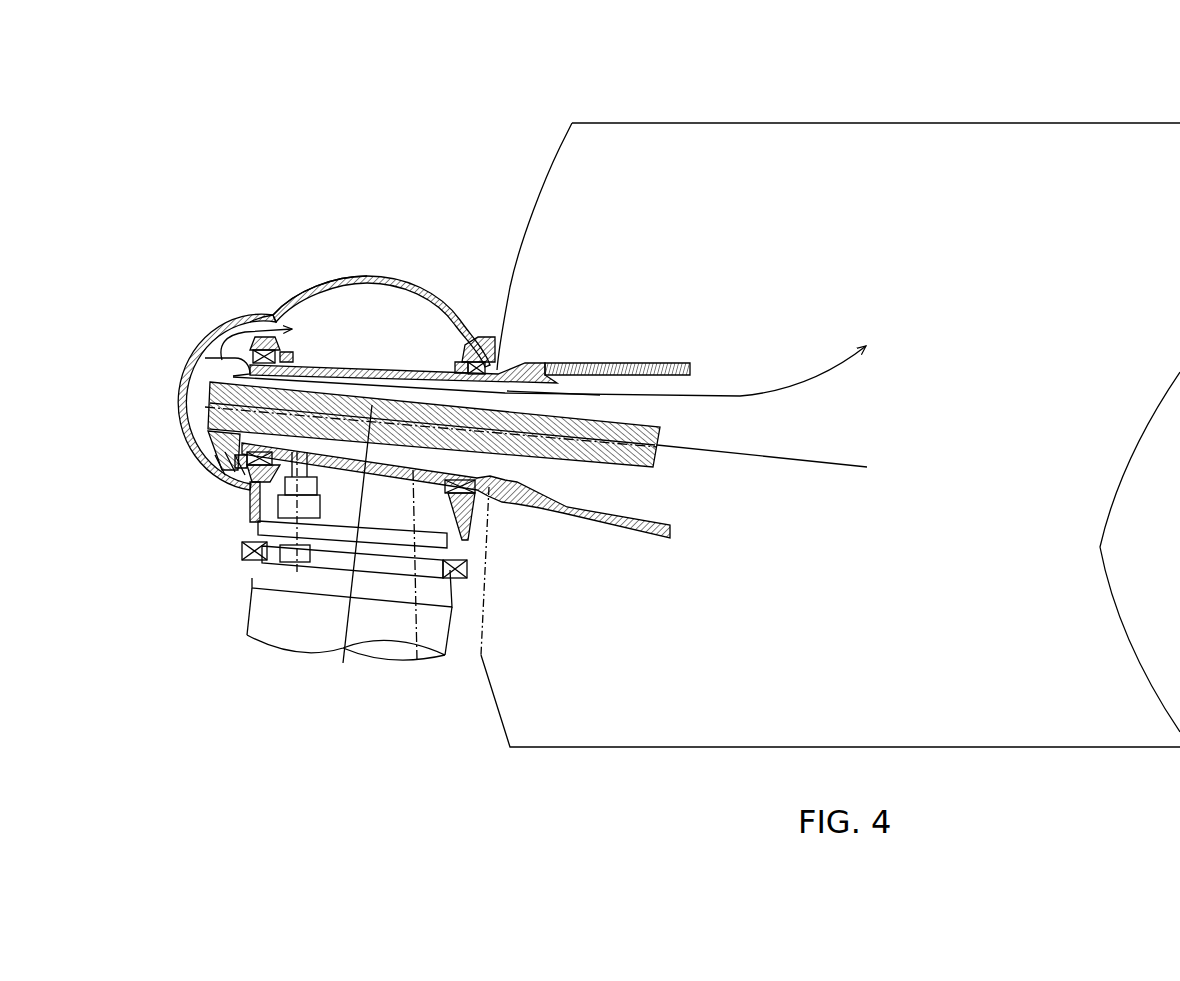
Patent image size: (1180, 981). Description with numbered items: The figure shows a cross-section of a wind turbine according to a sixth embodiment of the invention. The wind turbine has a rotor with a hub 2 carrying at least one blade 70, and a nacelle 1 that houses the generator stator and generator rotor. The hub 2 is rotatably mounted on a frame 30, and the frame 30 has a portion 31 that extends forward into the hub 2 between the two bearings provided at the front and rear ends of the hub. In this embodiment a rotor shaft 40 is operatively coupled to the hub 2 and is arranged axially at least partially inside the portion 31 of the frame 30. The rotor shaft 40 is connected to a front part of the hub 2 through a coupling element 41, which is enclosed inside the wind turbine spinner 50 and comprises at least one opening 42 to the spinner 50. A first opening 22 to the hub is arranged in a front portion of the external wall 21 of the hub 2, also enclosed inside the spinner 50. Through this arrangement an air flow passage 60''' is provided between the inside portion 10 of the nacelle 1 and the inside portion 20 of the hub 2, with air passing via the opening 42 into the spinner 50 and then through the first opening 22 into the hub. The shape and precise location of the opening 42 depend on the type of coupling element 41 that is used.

The nacelle 1 is at (674, 94).
The hub 2 is at (312, 263).
The inside portion of the nacelle 10 is at (580, 176).
The inside portion of the hub 20 is at (427, 325).
The external wall of the hub 21 is at (368, 276).
The first opening to the hub 22 is at (250, 320).
The frame 30 is at (548, 333).
The portion of the frame 31 is at (417, 660).
The rotor shaft 40 is at (653, 460).
The coupling element 41 is at (220, 443).
The opening to the spinner 42 is at (225, 365).
The wind turbine spinner 50 is at (240, 401).
The air flow passage 60''' is at (580, 384).
The blade 70 is at (292, 628).